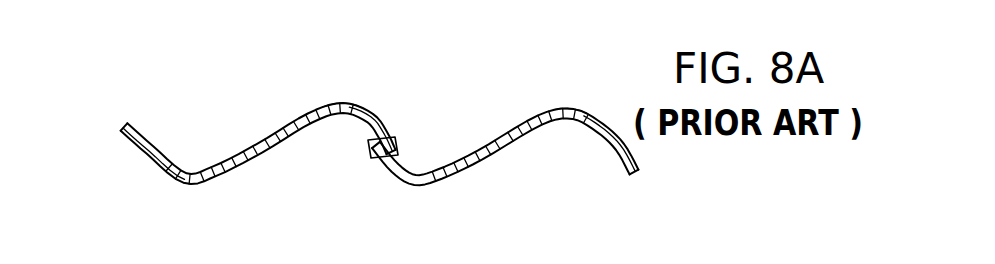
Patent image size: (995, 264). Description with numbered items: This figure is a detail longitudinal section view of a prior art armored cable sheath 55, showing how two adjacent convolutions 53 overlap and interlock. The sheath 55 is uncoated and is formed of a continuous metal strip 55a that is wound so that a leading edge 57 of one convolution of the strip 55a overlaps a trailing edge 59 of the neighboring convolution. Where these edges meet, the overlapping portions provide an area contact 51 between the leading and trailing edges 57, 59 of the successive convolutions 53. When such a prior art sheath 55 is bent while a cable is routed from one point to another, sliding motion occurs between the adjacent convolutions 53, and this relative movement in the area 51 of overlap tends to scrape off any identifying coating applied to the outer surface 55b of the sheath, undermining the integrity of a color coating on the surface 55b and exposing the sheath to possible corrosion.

The armored cable sheath 55 is at (250, 84).
The continuous metal strip 55a is at (211, 168).
The outer surface 55b is at (456, 161).
The convolutions 53 is at (314, 107).
The trailing edge 59 is at (121, 126).
The leading edge 57 is at (386, 164).
The area contact 51 is at (381, 147).